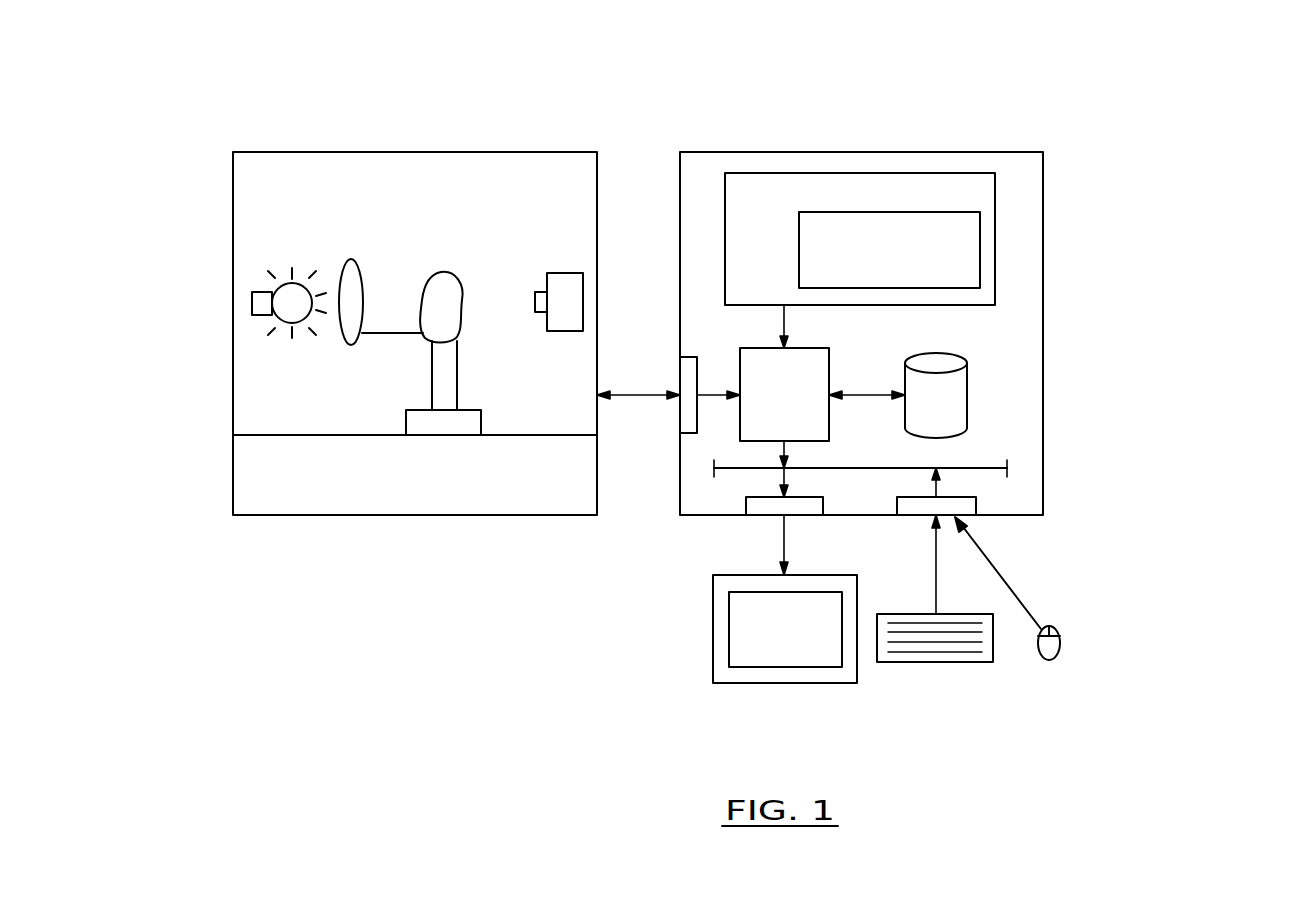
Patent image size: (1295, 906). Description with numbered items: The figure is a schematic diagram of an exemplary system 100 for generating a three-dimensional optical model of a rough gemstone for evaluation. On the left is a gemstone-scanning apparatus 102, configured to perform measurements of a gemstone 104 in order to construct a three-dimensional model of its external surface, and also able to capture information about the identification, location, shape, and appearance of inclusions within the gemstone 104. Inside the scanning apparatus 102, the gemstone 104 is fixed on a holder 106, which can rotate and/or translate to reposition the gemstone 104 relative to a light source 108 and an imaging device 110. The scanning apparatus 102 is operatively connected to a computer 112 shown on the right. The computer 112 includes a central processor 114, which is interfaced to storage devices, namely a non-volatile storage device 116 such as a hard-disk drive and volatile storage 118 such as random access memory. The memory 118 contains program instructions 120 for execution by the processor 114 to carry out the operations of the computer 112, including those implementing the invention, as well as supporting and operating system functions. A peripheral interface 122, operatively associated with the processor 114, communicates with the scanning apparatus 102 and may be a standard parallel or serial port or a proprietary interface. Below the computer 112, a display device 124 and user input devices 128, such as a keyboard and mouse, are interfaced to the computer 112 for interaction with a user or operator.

The system 100 is at (1118, 107).
The gemstone-scanning apparatus 102 is at (388, 152).
The gemstone 104 is at (448, 275).
The holder 106 is at (437, 368).
The light source 108 is at (268, 350).
The imaging device 110 is at (562, 277).
The computer 112 is at (788, 152).
The central processor 114 is at (810, 411).
The non-volatile storage device 116 is at (957, 411).
The volatile storage 118 is at (773, 210).
The program instructions 120 is at (853, 248).
The peripheral interface 122 is at (680, 418).
The display device 124 is at (713, 643).
The user input devices 128 is at (1027, 687).